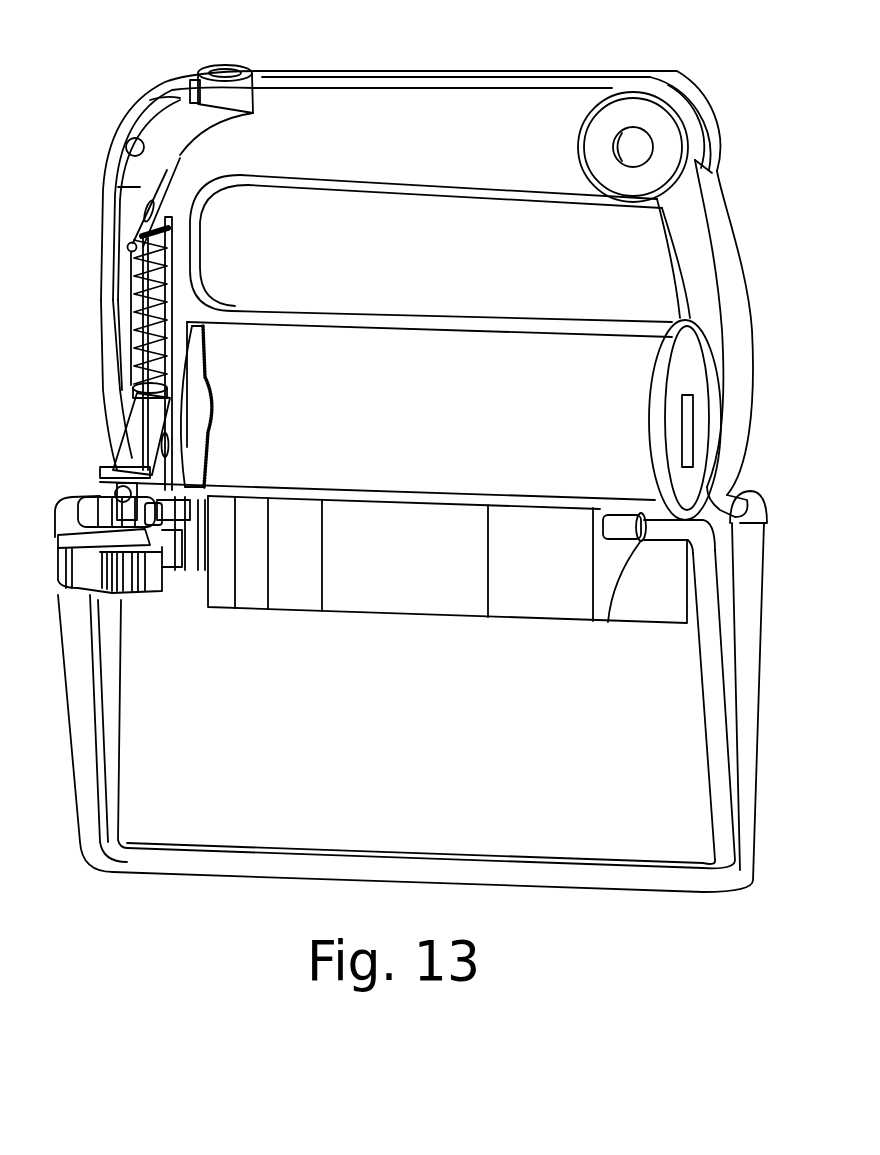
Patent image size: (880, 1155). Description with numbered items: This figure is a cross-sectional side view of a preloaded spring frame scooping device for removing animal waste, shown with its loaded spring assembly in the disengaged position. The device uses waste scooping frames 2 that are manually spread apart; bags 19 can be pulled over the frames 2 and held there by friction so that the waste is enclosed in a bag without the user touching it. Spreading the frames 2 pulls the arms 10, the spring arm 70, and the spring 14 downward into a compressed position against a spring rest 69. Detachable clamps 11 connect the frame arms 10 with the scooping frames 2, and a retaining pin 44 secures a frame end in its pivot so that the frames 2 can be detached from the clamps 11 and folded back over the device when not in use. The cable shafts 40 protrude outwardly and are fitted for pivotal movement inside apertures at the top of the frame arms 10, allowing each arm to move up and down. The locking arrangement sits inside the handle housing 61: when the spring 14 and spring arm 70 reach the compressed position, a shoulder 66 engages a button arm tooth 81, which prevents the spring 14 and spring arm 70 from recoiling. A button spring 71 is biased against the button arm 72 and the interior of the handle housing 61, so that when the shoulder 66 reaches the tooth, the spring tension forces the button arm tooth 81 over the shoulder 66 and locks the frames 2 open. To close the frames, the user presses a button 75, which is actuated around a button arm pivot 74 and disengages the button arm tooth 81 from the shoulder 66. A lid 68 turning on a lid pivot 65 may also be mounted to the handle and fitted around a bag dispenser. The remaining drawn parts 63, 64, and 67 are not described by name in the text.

The waste scooping frames 2 is at (116, 642).
The frame arms 10 is at (127, 425).
The detachable clamps 11 is at (165, 587).
The spring 14 is at (198, 295).
The bags 19 is at (435, 598).
The cable shafts 40 is at (183, 432).
The retaining pin 44 is at (115, 488).
The handle housing 61 is at (440, 71).
The handle grip portion 63 is at (172, 150).
The rod 64 is at (173, 240).
The lid pivot 65 is at (633, 147).
The shoulder 66 is at (127, 248).
The pivot boss 67 is at (633, 162).
The lid 68 is at (726, 243).
The spring rest 69 is at (130, 395).
The spring arm 70 is at (162, 278).
The button spring 71 is at (128, 213).
The button arm 72 is at (158, 125).
The button arm pivot 74 is at (128, 147).
The button 75 is at (224, 66).
The button arm tooth 81 is at (127, 300).